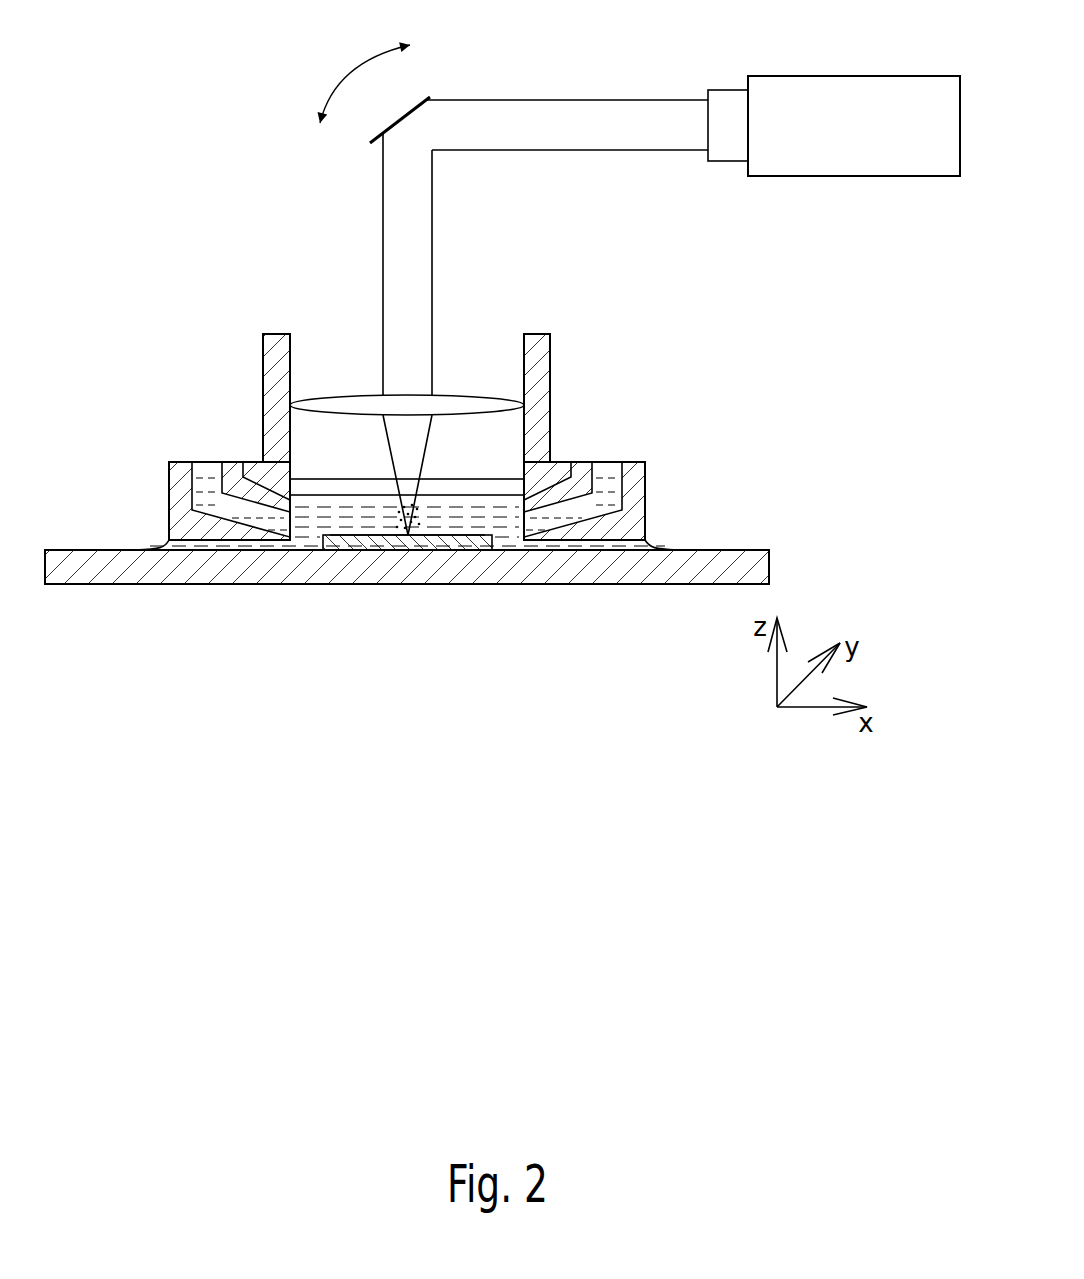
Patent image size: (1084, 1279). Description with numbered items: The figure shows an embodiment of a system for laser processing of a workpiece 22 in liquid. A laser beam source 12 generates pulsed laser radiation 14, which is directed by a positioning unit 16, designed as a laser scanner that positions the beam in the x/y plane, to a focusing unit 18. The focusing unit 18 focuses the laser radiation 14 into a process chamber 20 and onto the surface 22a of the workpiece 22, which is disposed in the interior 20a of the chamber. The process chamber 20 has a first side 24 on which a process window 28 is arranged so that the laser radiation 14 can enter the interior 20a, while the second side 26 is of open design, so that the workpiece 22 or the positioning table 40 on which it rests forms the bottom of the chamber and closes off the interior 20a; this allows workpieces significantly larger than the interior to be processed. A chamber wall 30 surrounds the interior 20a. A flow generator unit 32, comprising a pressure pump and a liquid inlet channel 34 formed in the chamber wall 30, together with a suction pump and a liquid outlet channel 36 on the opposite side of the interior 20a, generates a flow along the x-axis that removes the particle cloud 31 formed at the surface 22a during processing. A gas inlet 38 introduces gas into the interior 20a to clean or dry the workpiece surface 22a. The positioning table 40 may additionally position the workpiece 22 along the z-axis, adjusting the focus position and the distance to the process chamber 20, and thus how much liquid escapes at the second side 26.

The laser beam source 12 is at (827, 76).
The pulsed laser radiation 14 is at (607, 100).
The positioning unit 16 is at (430, 93).
The focusing unit 18 is at (235, 368).
The process chamber 20 is at (667, 510).
The interior 20a is at (510, 530).
The workpiece 22 is at (385, 545).
The surface 22a is at (440, 533).
The first side 24 is at (587, 438).
The second side 26 is at (605, 551).
The process window 28 is at (320, 483).
The chamber wall 30 is at (165, 540).
The particle cloud 31 is at (395, 517).
The flow generator unit 32 is at (180, 428).
The liquid inlet channel 34 is at (202, 465).
The liquid outlet channel 36 is at (610, 470).
The gas inlet 38 is at (242, 465).
The positioning table 40 is at (148, 562).